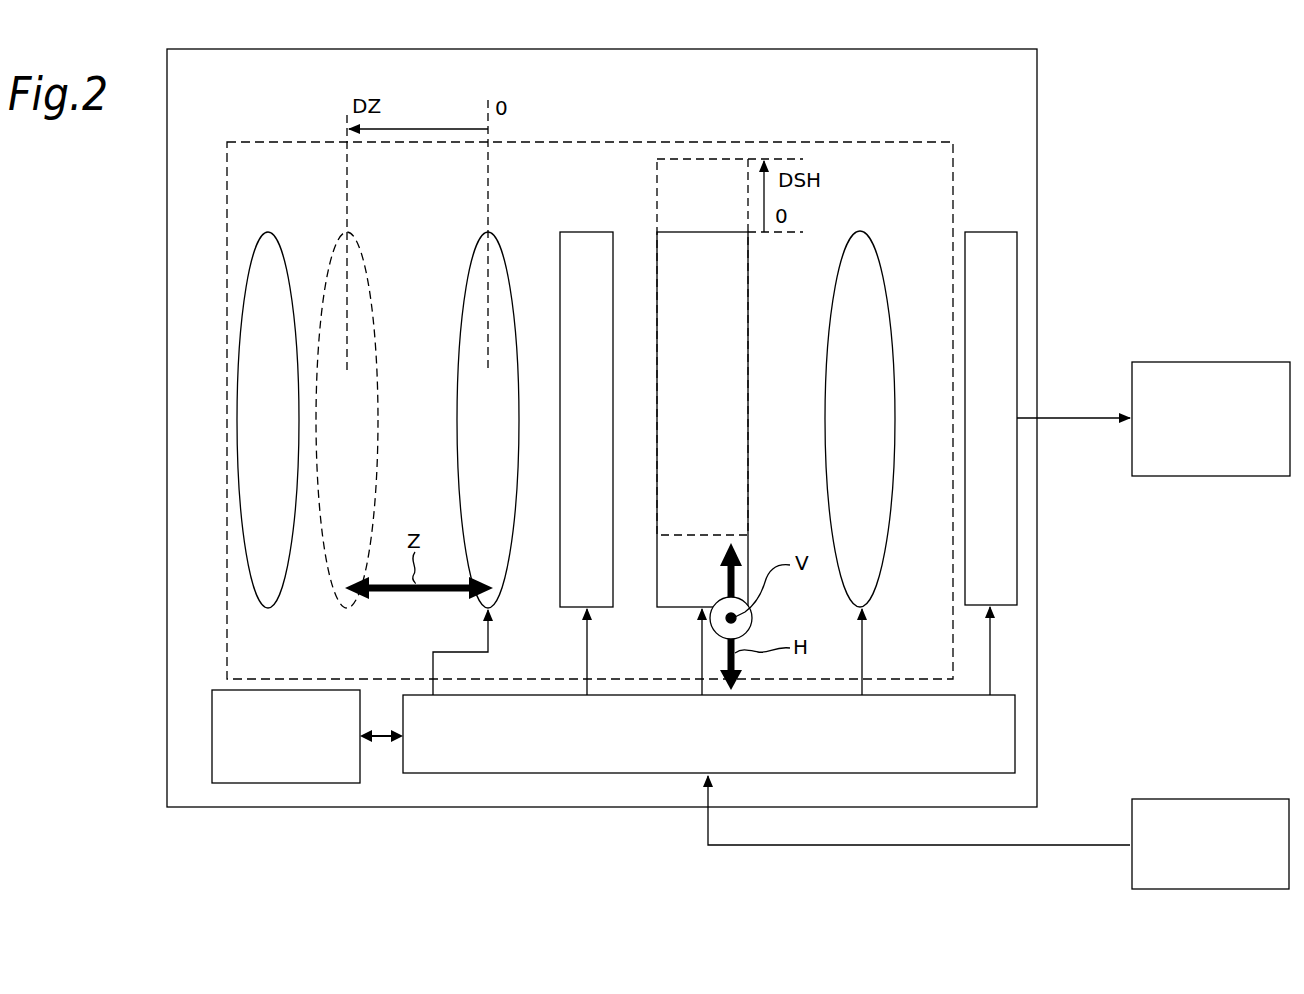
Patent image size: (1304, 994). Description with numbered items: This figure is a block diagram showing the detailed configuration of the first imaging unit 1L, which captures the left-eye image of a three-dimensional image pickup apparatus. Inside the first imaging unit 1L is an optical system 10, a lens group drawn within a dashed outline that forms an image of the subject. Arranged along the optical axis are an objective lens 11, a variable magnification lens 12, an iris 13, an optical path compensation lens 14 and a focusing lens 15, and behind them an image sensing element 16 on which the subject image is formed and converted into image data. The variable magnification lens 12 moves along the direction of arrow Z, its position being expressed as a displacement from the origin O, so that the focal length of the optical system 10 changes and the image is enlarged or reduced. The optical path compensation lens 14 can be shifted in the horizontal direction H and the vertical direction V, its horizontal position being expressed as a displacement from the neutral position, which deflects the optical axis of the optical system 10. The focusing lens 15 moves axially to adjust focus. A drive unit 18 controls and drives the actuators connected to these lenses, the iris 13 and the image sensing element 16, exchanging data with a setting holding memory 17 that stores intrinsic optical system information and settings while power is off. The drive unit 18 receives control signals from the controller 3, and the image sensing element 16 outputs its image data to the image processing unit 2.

The first imaging unit 1L is at (1040, 208).
The optical system 10 is at (957, 154).
The objective lens 11 is at (285, 252).
The variable magnification lens 12 is at (473, 252).
The iris 13 is at (590, 232).
The optical path compensation lens 14 is at (703, 232).
The focusing lens 15 is at (878, 252).
The image sensing element 16 is at (997, 232).
The setting holding memory 17 is at (283, 784).
The drive unit 18 is at (473, 774).
The image processing unit 2 is at (1213, 362).
The controller 3 is at (1213, 799).